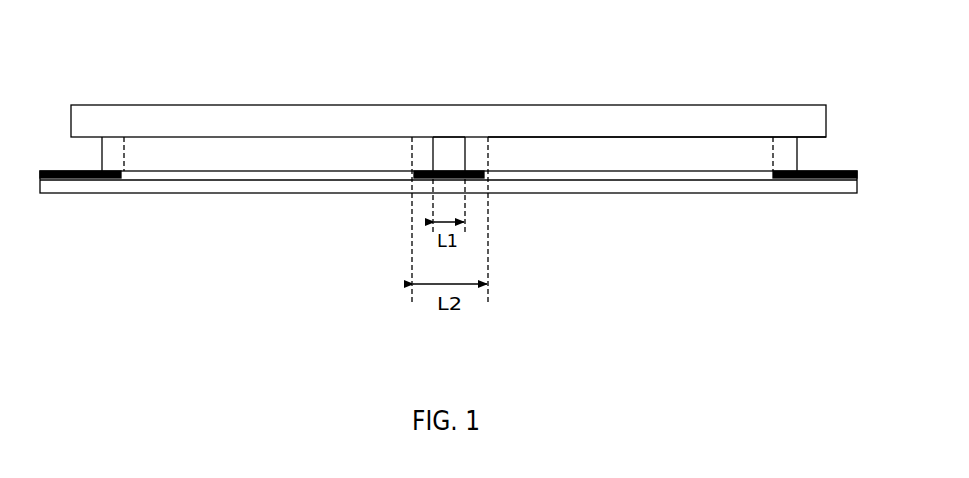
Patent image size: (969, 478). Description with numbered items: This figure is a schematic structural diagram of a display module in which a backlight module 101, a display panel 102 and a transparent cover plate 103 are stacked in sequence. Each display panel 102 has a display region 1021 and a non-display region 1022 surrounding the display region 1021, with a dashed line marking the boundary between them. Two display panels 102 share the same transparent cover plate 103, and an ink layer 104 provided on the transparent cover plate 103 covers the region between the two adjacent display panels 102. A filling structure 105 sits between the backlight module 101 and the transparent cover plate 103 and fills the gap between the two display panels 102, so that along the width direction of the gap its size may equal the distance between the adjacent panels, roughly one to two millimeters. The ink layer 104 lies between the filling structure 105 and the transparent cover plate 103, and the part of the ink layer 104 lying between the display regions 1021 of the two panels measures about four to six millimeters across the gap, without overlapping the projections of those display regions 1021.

The backlight module 101 is at (92, 117).
The display panel 102 is at (345, 150).
The display region 1021 is at (566, 140).
The non-display region 1022 is at (475, 141).
The transparent cover plate 103 is at (243, 185).
The ink layer 104 is at (418, 172).
The filling structure 105 is at (456, 145).